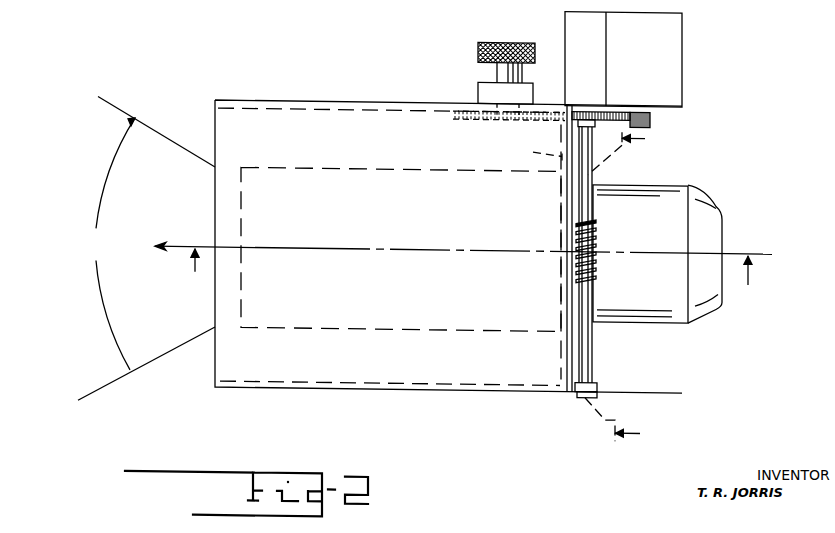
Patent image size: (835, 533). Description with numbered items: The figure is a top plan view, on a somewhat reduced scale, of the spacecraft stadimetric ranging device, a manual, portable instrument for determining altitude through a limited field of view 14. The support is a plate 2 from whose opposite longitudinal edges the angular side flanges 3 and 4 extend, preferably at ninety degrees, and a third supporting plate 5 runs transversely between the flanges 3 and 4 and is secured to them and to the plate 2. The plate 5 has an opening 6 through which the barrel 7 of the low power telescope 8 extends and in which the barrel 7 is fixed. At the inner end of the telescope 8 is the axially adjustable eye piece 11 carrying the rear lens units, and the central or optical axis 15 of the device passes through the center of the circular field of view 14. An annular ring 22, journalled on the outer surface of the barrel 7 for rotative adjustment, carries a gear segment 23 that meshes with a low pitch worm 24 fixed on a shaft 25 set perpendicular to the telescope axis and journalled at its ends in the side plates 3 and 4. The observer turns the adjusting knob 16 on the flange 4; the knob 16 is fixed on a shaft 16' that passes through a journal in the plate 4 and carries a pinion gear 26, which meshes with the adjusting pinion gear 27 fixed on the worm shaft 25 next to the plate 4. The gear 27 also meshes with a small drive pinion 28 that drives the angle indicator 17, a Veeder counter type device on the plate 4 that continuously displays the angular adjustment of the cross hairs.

The plate 2 is at (280, 110).
The side flange 3 is at (368, 388).
The side flange 4 is at (355, 100).
The supporting plate 5 is at (587, 286).
The opening 6 is at (553, 326).
The barrel 7 is at (320, 328).
The telescope 8 is at (705, 183).
The eye piece 11 is at (718, 200).
The field of view 14 is at (725, 240).
The optical axis 15 is at (188, 245).
The adjusting knob 16 is at (505, 39).
The shaft 16' is at (490, 90).
The angle indicator 17 is at (683, 37).
The annular ring 22 is at (597, 200).
The gear segment 23 is at (597, 296).
The worm 24 is at (578, 275).
The worm shaft 25 is at (592, 350).
The pinion gear 26 is at (460, 118).
The adjusting pinion gear 27 is at (614, 107).
The drive pinion 28 is at (650, 113).